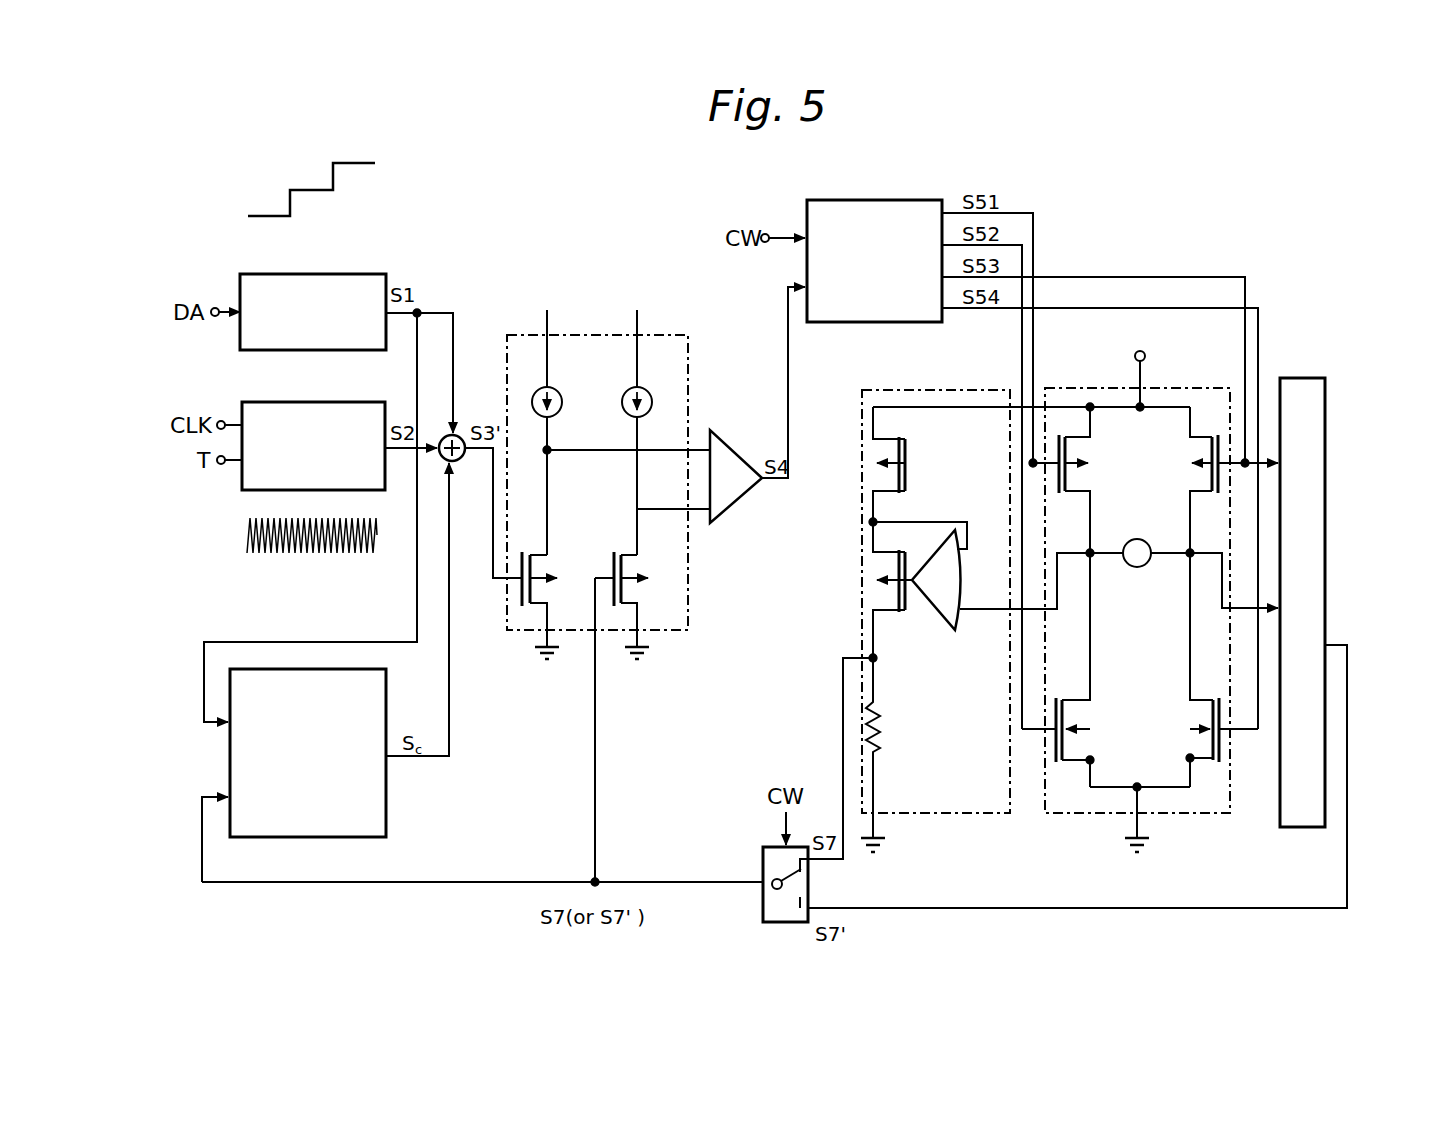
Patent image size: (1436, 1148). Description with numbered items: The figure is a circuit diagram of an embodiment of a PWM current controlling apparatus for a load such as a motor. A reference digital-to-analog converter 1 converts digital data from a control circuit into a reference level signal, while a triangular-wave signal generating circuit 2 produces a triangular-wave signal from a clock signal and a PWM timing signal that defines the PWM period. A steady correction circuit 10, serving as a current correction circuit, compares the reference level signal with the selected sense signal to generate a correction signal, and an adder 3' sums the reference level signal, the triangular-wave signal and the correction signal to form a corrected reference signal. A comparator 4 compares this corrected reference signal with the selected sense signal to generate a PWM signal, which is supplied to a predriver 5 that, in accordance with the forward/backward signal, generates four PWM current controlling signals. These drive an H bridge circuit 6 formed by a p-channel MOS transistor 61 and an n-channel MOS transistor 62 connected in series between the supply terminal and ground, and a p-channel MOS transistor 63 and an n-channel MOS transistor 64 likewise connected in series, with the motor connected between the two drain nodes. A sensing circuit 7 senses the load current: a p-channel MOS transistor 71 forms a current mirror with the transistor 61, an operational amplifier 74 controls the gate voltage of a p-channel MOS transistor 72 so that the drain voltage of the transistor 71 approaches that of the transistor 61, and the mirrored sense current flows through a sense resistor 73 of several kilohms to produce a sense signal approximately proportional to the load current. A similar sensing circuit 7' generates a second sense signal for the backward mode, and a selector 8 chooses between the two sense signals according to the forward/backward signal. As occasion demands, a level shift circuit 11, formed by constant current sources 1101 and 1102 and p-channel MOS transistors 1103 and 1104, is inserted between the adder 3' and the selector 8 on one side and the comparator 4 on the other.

The reference digital-to-analog converter 1 is at (290, 274).
The triangular-wave signal generating circuit 2 is at (297, 402).
The adder 3' is at (462, 408).
The comparator 4 is at (737, 447).
The predriver 5 is at (855, 200).
The H bridge circuit 6 is at (1205, 388).
The sensing circuit 7 is at (967, 615).
The sensing circuit 7' is at (1304, 571).
The selector 8 is at (763, 868).
The steady correction circuit 10 is at (386, 797).
The level shift circuit 11 is at (663, 335).
The p-channel MOS transistor 61 is at (1073, 496).
The n-channel MOS transistor 62 is at (1077, 698).
The p-channel MOS transistor 63 is at (1200, 496).
The n-channel MOS transistor 64 is at (1197, 698).
The p-channel MOS transistor 71 is at (908, 447).
The p-channel MOS transistor 72 is at (911, 566).
The sense resistor 73 is at (878, 710).
The operational amplifier 74 is at (940, 622).
The constant current source 1101 is at (557, 395).
The constant current source 1102 is at (622, 406).
The p-channel MOS transistor 1103 is at (577, 558).
The p-channel MOS transistor 1104 is at (633, 552).